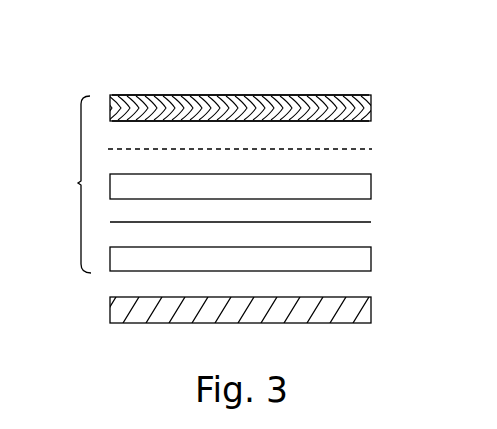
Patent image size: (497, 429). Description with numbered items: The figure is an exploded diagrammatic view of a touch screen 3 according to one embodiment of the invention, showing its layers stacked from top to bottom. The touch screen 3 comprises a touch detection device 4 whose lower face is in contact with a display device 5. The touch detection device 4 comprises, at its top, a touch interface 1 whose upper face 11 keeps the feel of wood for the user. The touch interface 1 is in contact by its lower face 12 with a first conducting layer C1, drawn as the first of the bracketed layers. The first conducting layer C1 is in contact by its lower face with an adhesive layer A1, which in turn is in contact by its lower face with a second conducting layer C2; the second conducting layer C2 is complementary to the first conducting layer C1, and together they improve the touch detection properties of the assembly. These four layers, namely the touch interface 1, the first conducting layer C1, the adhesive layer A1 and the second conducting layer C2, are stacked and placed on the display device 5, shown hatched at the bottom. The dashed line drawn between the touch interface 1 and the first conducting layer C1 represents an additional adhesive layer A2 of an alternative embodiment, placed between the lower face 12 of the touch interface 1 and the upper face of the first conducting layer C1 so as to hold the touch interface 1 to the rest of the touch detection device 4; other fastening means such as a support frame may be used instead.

The touch interface 1 is at (386, 108).
The upper face 11 is at (149, 83).
The lower face 12 is at (112, 133).
The additional adhesive layer A2 is at (386, 149).
The touch detection device 4 is at (255, 184).
The first conducting layer C1 is at (386, 186).
The adhesive layer A1 is at (386, 222).
The second conducting layer C2 is at (386, 259).
The display device 5 is at (386, 311).
The touch screen 3 is at (41, 307).